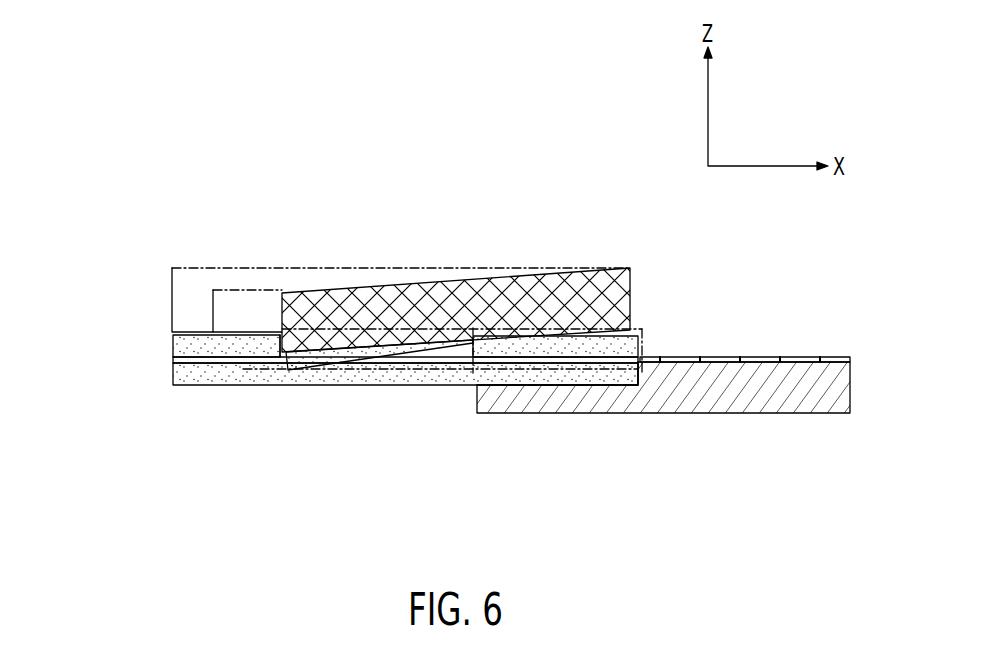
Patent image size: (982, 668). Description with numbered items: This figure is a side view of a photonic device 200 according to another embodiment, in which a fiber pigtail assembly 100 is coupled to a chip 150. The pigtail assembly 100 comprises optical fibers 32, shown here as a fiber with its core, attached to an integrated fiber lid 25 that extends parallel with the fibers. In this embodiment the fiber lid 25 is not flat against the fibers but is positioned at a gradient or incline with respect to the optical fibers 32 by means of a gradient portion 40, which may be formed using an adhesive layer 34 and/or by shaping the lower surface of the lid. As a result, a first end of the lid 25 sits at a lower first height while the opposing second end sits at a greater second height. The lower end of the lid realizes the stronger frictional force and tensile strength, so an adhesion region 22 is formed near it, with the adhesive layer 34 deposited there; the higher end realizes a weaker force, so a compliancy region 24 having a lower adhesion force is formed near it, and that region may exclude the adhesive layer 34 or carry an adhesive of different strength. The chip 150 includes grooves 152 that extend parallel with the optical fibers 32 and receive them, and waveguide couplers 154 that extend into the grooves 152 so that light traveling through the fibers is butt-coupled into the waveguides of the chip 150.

The fiber pigtail assembly 100 is at (163, 449).
The photonic device 200 is at (379, 187).
The adhesion region 22 is at (368, 383).
The compliancy region 24 is at (548, 372).
The fiber lid 25 is at (565, 277).
The optical fibers 32 is at (405, 406).
The adhesive layer 34 is at (420, 348).
The gradient portion 40 is at (293, 366).
The chip 150 is at (727, 414).
The grooves 152 is at (668, 384).
The waveguide couplers 154 is at (670, 358).